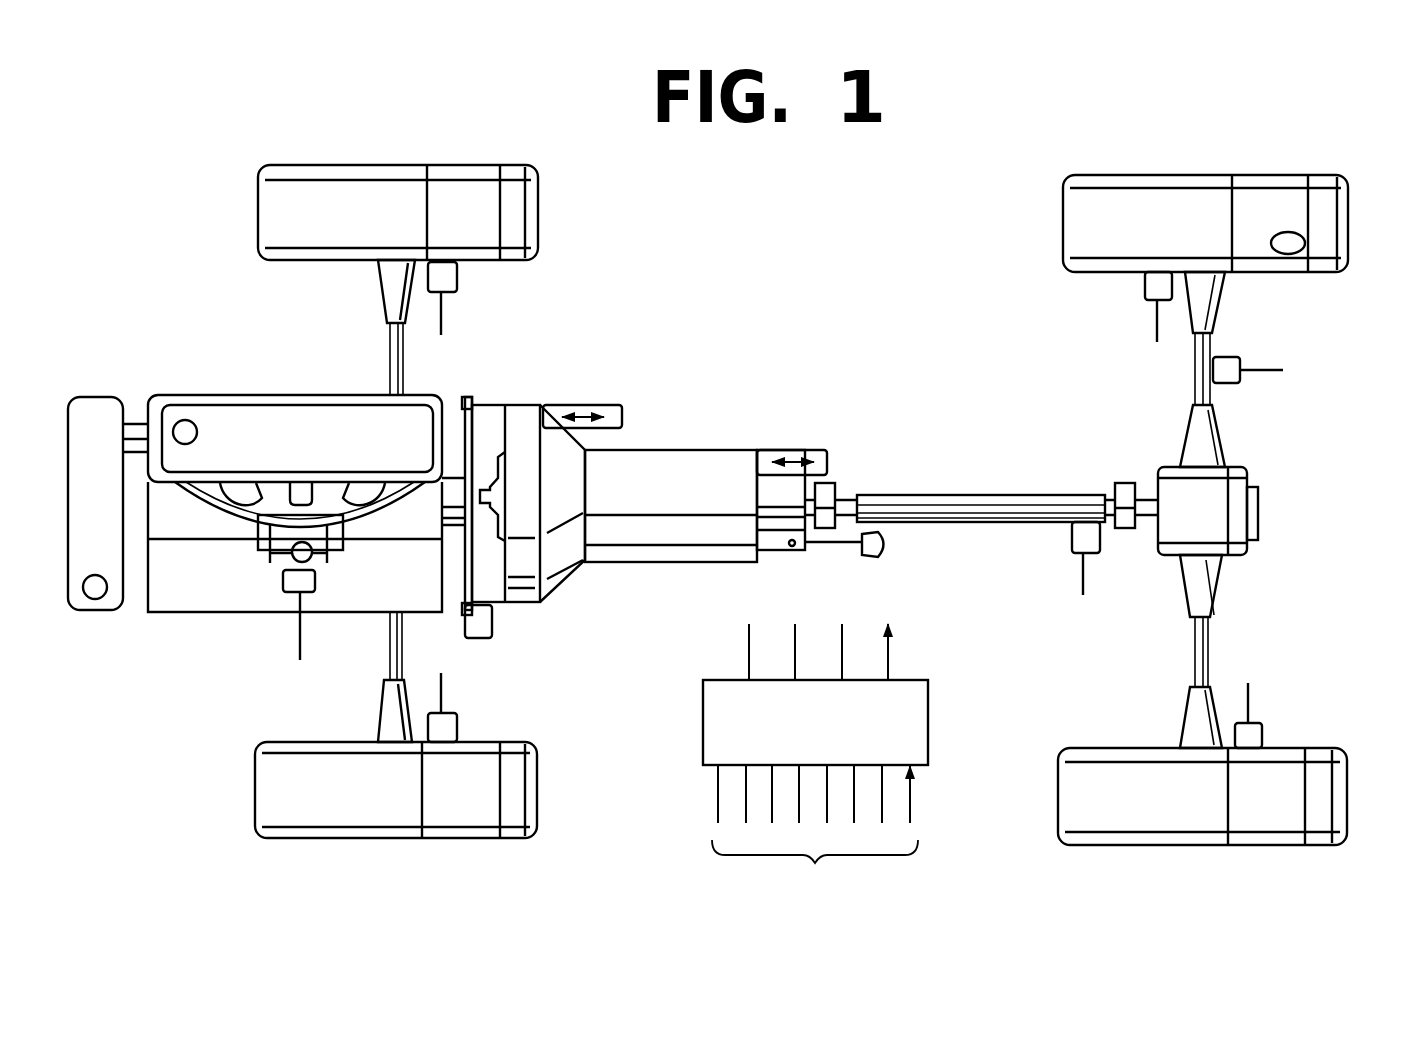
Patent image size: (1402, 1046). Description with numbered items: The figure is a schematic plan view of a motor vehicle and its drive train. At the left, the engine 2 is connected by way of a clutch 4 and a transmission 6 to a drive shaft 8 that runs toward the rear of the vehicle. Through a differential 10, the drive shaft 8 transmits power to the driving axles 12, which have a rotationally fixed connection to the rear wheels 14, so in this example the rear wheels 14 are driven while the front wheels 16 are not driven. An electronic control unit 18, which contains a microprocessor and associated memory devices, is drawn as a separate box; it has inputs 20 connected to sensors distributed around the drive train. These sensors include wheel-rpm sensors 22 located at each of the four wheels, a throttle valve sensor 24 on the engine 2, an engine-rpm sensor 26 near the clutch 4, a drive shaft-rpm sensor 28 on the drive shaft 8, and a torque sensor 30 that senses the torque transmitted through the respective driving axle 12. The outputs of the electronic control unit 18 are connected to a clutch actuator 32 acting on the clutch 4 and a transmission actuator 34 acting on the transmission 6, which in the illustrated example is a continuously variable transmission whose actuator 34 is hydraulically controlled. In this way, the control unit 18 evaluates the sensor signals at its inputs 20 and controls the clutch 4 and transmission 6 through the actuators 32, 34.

The engine 2 is at (220, 425).
The clutch 4 is at (528, 420).
The transmission 6 is at (665, 505).
The drive shaft 8 is at (997, 505).
The differential 10 is at (1186, 524).
The driving axles 12 is at (1207, 655).
The rear wheels 14 is at (1186, 238).
The front wheels 16 is at (380, 227).
The electronic control unit 18 is at (801, 742).
The inputs 20 is at (815, 832).
The wheel-rpm sensors 22 is at (443, 278).
The throttle valve sensor 24 is at (293, 582).
The engine-rpm sensor 26 is at (480, 621).
The drive shaft-rpm sensor 28 is at (1080, 540).
The torque sensor 30 is at (1230, 360).
The clutch actuator 32 is at (613, 405).
The transmission actuator 34 is at (817, 450).